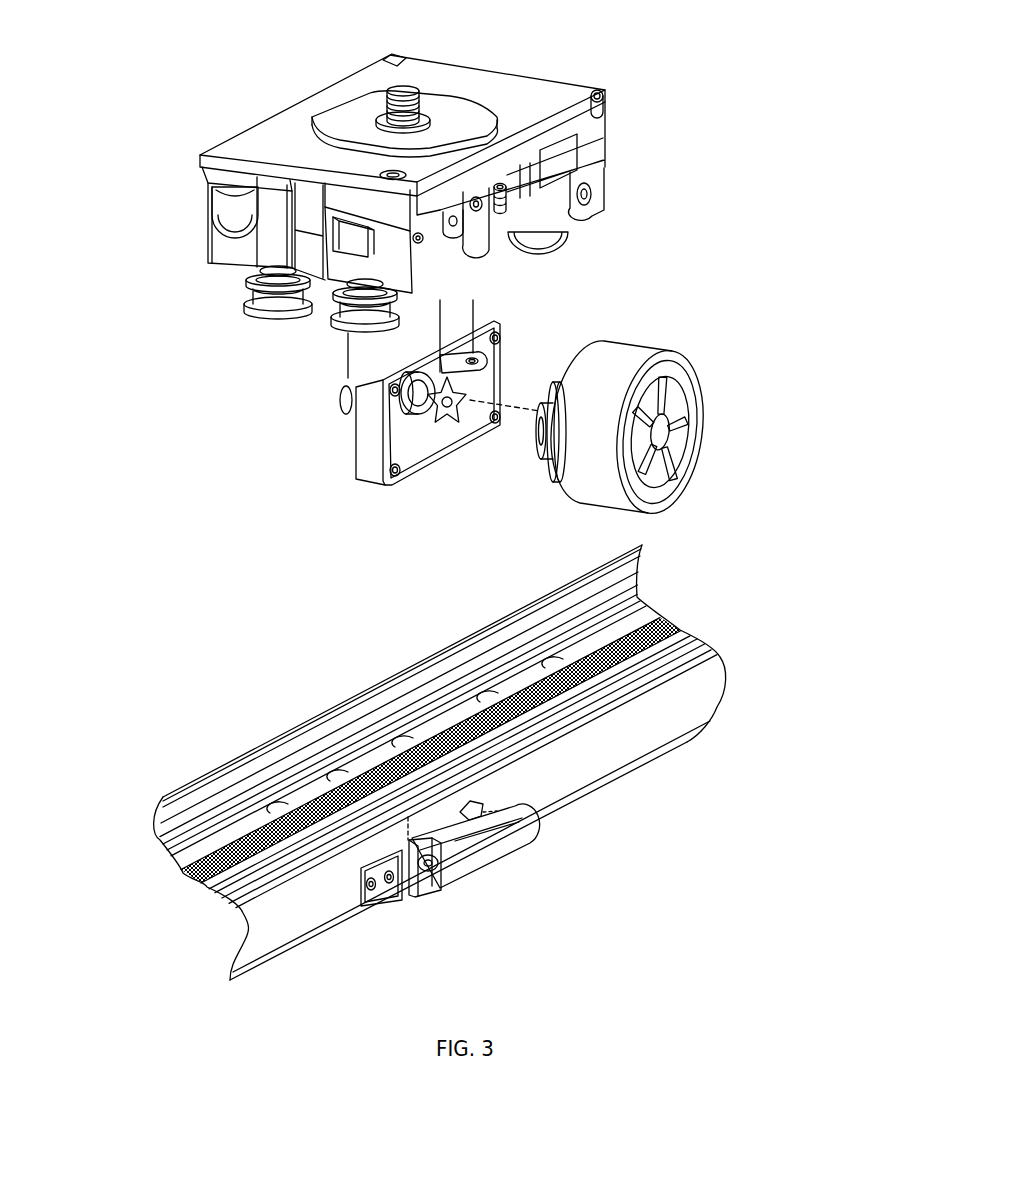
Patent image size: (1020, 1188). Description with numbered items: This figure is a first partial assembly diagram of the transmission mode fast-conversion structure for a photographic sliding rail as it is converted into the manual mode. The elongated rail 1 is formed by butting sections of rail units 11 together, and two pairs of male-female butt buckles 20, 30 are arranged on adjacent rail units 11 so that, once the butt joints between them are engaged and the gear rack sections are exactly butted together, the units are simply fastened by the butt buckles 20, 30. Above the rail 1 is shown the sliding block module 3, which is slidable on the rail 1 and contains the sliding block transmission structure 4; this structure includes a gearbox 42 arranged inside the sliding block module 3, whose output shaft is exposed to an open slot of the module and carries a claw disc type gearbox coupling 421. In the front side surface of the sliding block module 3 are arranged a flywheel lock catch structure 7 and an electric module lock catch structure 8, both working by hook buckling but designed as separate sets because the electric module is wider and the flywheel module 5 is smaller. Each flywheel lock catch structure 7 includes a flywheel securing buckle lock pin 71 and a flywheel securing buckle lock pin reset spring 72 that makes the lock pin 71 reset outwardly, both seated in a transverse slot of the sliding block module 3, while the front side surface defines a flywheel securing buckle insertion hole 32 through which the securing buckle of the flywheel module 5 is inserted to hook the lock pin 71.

The rail 1 is at (440, 762).
The rail unit 11 is at (545, 700).
The sliding block module 3 is at (530, 107).
The sliding block transmission structure 4 is at (376, 429).
The gearbox 42 is at (368, 437).
The claw disc type gearbox coupling 421 is at (450, 418).
The flywheel module 5 is at (677, 478).
The flywheel lock catch structure 7 is at (398, 173).
The electric module lock catch structure 8 is at (380, 247).
The flywheel securing buckle lock pin 71 is at (490, 247).
The flywheel securing buckle lock pin reset spring 72 is at (490, 193).
The flywheel securing buckle insertion hole 32 is at (508, 203).
The male butt buckle 20 is at (425, 878).
The female butt buckle 30 is at (478, 850).